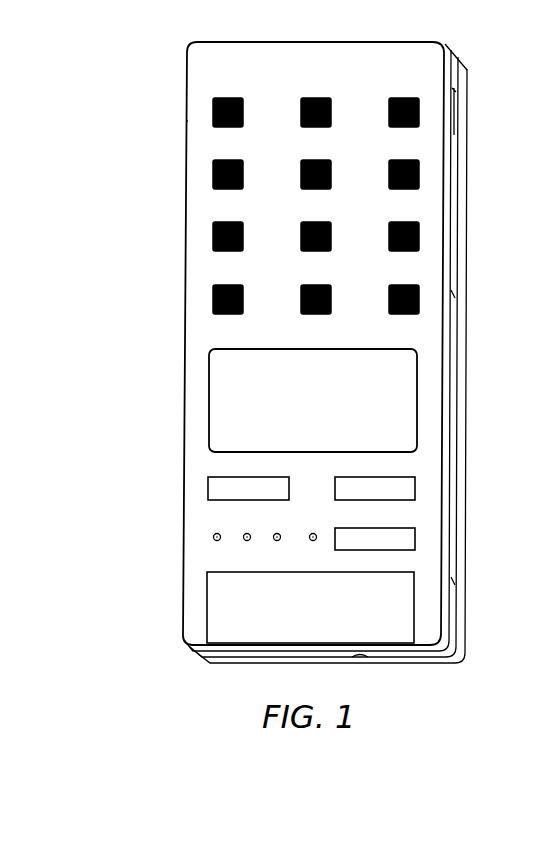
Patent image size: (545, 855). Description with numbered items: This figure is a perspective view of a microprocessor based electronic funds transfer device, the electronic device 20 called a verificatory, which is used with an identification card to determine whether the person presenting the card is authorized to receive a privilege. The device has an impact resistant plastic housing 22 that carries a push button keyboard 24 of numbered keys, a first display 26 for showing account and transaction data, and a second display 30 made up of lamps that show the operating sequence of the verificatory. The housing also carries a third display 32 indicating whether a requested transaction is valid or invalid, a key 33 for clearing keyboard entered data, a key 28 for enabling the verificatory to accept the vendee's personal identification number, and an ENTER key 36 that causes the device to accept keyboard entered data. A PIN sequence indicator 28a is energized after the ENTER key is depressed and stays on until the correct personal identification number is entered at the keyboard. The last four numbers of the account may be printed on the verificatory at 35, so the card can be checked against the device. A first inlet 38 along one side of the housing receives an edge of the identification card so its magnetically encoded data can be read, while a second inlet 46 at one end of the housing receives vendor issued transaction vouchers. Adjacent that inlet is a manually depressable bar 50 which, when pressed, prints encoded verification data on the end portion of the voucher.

The electronic device (verificatory) 20 is at (152, 184).
The housing 22 is at (396, 65).
The push button keyboard 24 is at (266, 94).
The first display 26 is at (230, 394).
The PIN key 28 is at (422, 540).
The PIN sequence indicator 28a is at (313, 531).
The second display (sequence display) 30 is at (198, 541).
The third display 32 is at (416, 340).
The clear key 33 is at (208, 487).
The printed account numbers 35 is at (418, 419).
The ENTER key 36 is at (422, 489).
The first inlet 38 is at (456, 150).
The second inlet 46 is at (360, 656).
The manually depressable bar 50 is at (388, 614).